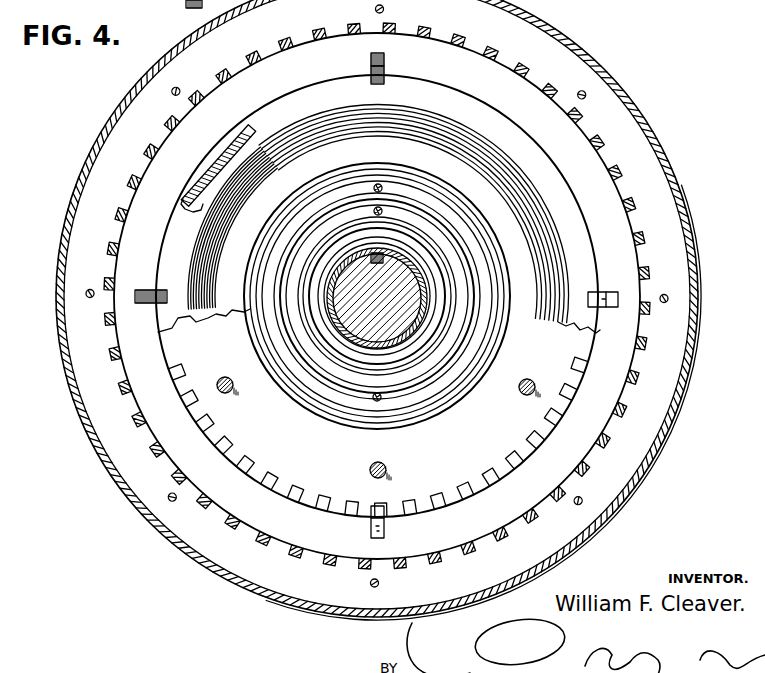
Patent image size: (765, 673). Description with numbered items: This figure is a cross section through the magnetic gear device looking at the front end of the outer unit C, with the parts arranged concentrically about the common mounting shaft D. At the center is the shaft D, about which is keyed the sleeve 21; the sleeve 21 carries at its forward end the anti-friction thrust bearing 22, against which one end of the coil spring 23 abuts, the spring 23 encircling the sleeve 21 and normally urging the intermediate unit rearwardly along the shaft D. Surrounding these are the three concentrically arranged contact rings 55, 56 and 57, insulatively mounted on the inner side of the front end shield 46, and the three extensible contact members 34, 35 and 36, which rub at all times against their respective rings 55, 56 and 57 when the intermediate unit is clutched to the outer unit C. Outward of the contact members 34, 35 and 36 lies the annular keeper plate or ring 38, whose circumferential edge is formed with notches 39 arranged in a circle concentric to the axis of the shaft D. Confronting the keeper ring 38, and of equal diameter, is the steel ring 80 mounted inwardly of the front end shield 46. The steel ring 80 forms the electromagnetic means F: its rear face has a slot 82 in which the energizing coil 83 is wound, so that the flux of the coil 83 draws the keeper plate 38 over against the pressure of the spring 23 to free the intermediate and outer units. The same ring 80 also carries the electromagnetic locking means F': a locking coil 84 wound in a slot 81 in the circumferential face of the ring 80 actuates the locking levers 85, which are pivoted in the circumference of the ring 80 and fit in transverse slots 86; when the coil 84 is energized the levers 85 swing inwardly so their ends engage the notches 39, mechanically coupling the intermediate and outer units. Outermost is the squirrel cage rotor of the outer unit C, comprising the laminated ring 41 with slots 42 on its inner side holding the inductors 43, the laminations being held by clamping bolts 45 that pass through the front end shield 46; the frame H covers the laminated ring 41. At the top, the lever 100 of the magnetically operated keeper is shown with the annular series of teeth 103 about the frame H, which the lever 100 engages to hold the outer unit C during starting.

The sleeve 21 is at (419, 290).
The anti-friction thrust bearing 22 is at (419, 251).
The coil spring 23 is at (414, 244).
The contact member 34 is at (381, 187).
The contact member 35 is at (376, 402).
The contact member 36 is at (382, 210).
The keeper plate or ring 38 is at (242, 428).
The notches 39 is at (251, 471).
The laminated ring 41 is at (84, 264).
The slots 42 is at (433, 50).
The inductors 43 is at (458, 36).
The clamping bolts 45 is at (670, 299).
The front end shield 46 is at (140, 364).
The contact ring 55 is at (297, 374).
The contact ring 56 is at (315, 370).
The contact ring 57 is at (328, 372).
The steel ring 80 is at (527, 158).
The slot 81 is at (200, 180).
The slot 82 is at (196, 256).
The energizing coil 83 is at (291, 143).
The energizing coil 84 is at (228, 153).
The locking levers 85 is at (372, 70).
The transverse slots 86 is at (384, 78).
The lever 100 is at (186, 6).
The teeth 103 is at (160, 2).
The outer unit C is at (655, 207).
The shaft D is at (376, 310).
The electromagnetic means F is at (604, 149).
The electromagnetic locking means F' is at (124, 175).
The frame H is at (178, 544).